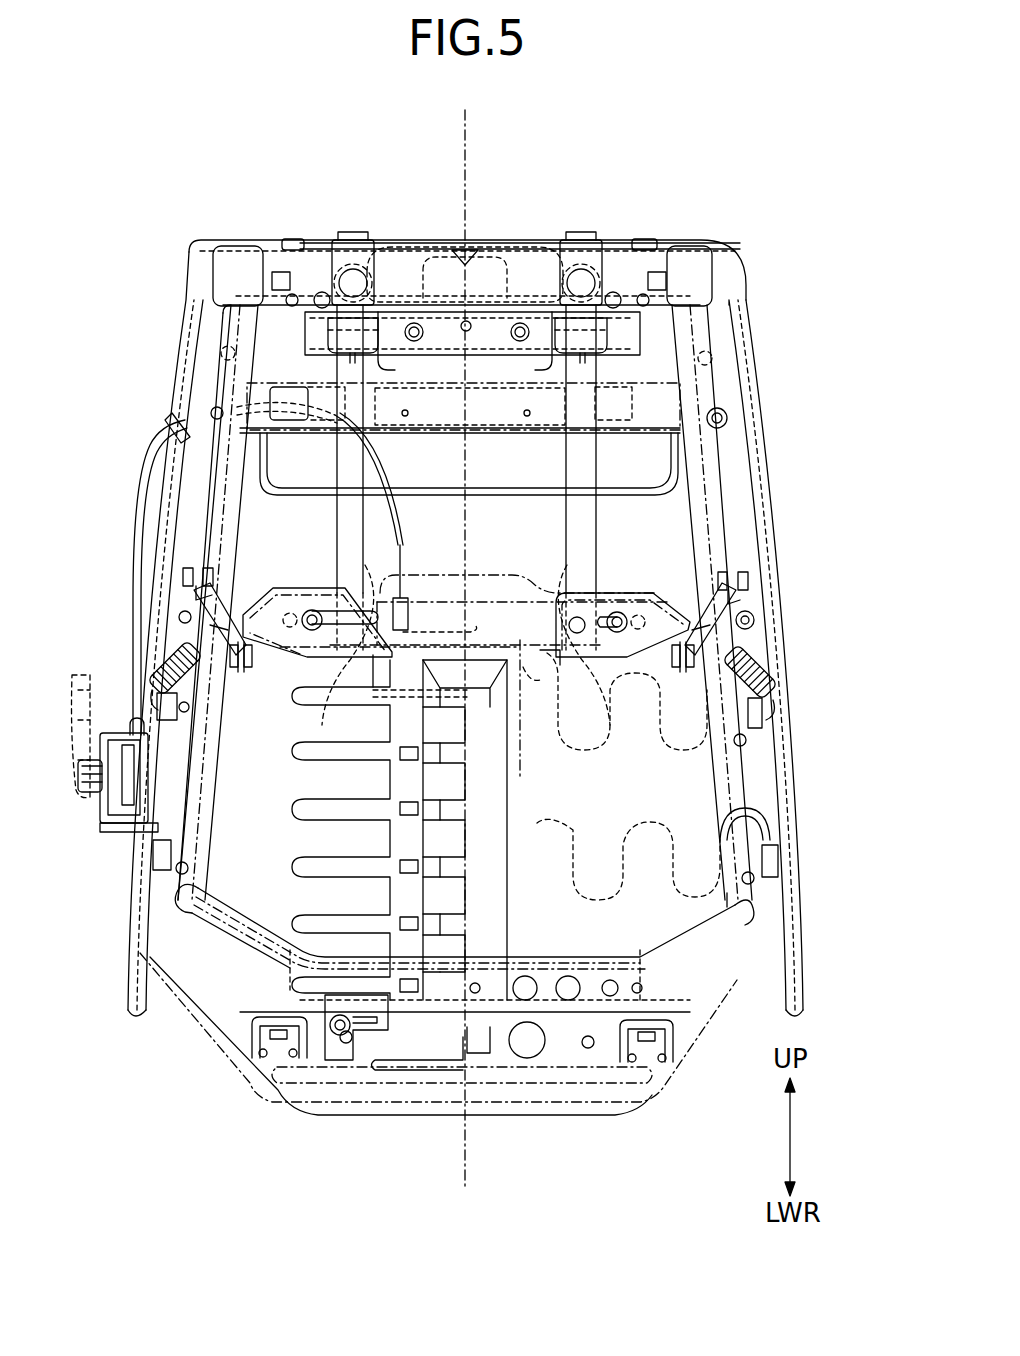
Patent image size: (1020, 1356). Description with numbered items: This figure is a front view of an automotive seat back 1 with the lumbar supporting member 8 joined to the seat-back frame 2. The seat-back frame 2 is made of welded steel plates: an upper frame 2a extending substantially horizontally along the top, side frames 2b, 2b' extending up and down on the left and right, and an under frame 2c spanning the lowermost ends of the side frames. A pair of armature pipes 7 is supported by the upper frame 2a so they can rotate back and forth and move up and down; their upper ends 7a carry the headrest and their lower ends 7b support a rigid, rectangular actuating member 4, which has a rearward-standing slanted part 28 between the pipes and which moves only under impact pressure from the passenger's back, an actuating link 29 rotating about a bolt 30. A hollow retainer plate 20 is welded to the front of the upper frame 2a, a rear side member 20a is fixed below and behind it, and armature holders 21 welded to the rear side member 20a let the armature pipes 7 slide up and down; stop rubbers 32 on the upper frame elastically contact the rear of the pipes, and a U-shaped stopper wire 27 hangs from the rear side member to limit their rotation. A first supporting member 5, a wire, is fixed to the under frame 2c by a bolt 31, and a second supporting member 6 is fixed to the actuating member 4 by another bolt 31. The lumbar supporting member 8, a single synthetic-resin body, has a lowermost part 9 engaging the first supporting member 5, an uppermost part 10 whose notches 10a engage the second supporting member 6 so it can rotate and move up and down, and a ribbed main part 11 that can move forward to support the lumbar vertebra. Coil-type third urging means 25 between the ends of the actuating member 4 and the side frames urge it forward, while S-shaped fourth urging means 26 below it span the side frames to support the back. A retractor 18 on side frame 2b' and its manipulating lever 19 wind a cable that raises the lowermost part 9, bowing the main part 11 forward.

The seat back 1 is at (775, 370).
The seat-back frame 2 is at (758, 310).
The upper frame 2a is at (640, 242).
The side frame 2b is at (748, 602).
The side frame 2b' is at (173, 602).
The under frame 2c is at (578, 1100).
The actuating member 4 is at (610, 598).
The first supporting member 5 is at (412, 1065).
The second supporting member 6 is at (350, 595).
The armature pipe 7 is at (335, 520).
The upper end of armature pipe 7a is at (355, 240).
The lower end of armature pipe 7b is at (338, 670).
The lumbar supporting member 8 is at (290, 815).
The lowermost part 9 is at (452, 1045).
The uppermost part 10 is at (455, 610).
The notches 10a is at (400, 560).
The main part 11 is at (395, 785).
The retractor 18 is at (112, 843).
The manipulating lever 19 is at (75, 668).
The retainer plate 20 is at (400, 280).
The rear side member 20a is at (510, 410).
The armature holder 21 is at (378, 345).
The third urging means 25 is at (195, 700).
The fourth urging means 26 is at (553, 722).
The stopper wire 27 is at (508, 480).
The slanted part 28 is at (498, 582).
The actuating link 29 is at (212, 607).
The bolt 30 is at (248, 665).
The bolt 31 is at (308, 632).
The stop rubber 32 is at (295, 240).